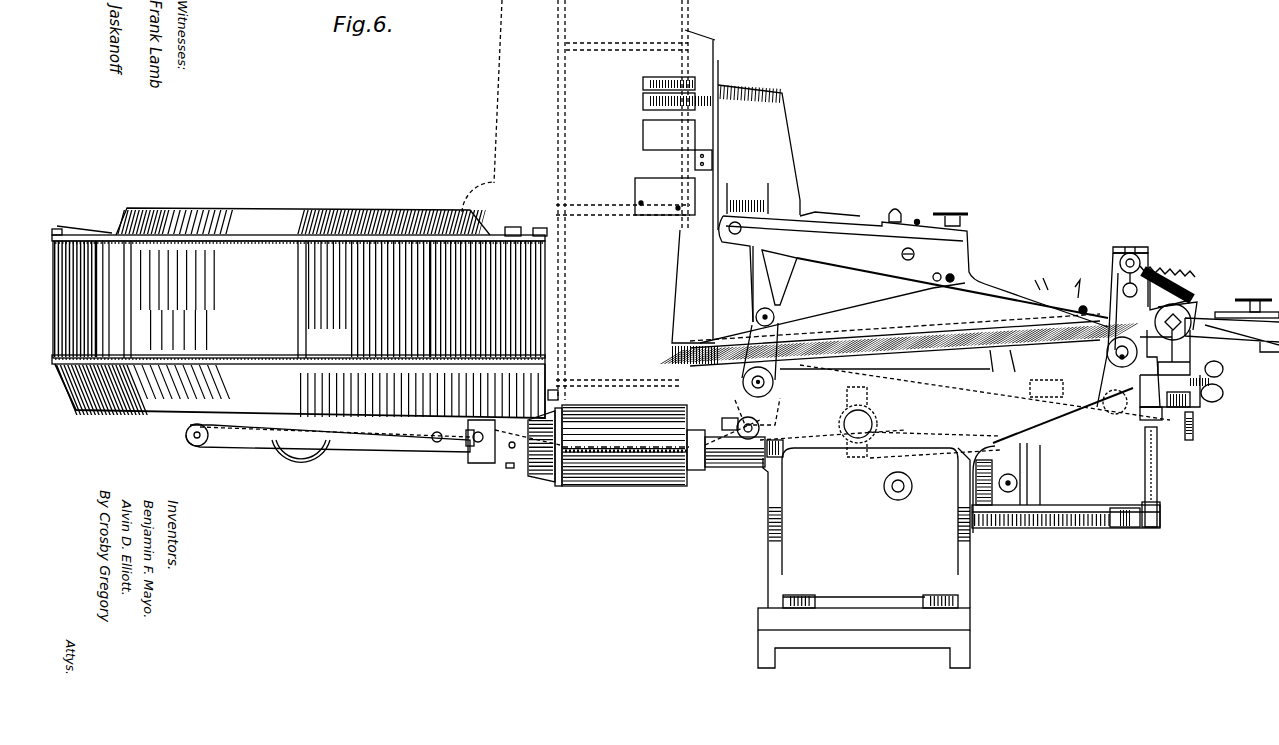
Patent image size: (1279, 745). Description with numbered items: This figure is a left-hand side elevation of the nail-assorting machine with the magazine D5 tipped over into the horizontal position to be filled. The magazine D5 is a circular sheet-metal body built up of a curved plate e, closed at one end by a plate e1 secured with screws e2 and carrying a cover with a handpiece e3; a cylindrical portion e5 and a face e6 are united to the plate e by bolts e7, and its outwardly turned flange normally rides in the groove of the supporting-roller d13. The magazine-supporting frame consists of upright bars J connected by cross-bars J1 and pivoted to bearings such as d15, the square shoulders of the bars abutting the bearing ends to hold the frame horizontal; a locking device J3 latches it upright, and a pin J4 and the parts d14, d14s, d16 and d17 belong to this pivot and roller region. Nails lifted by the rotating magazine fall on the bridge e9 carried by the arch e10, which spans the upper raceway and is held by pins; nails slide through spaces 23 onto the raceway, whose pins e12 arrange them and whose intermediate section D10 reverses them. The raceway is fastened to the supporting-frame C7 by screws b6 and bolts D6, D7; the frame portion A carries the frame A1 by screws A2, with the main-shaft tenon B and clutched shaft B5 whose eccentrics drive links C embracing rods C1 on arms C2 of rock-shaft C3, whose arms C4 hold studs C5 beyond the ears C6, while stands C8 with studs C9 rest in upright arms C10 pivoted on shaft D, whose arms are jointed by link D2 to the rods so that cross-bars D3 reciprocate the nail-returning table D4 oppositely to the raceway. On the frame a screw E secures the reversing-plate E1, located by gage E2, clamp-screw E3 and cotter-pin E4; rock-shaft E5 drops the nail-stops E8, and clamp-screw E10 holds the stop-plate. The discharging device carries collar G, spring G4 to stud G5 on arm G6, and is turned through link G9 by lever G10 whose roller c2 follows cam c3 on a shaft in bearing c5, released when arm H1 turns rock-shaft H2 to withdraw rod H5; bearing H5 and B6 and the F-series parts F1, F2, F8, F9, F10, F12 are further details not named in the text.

The curved plate e is at (75, 408).
The end plate e1 is at (128, 425).
The screws e2 is at (85, 405).
The handpiece e3 is at (300, 452).
The cylindrical portion e5 is at (350, 240).
The face e6 is at (174, 234).
The bolts e7 is at (298, 283).
The bridge e9 is at (650, 134).
The arch e10 is at (806, 96).
The pins e12 is at (748, 207).
The spaces 23 is at (645, 90).
The shaft D is at (1138, 354).
The link D2 is at (1098, 418).
The cross-bars D3 is at (805, 355).
The nail-returning table D4 is at (930, 305).
The magazine D5 is at (270, 194).
The bolt D6 is at (920, 253).
The bolt D7 is at (742, 229).
The intermediate connecting-section D10 is at (1099, 365).
The links C is at (800, 418).
The rods C1 is at (722, 428).
The arms C2 is at (760, 425).
The rock-shaft C3 is at (776, 383).
The upwardly-extended arms C4 is at (752, 335).
The shafts or studs C5 is at (758, 315).
The ears or legs C6 is at (764, 270).
The supporting-frame C7 is at (858, 236).
The stands C8 is at (1113, 262).
The studs C9 is at (1129, 297).
The upright arms C10 is at (1125, 334).
The screw E is at (953, 212).
The reversing-plate E1 is at (975, 234).
The gage E2 is at (882, 203).
The adjusting clamp-screw E3 is at (898, 204).
The cotter-pin E4 is at (918, 218).
The rock-shaft E5 is at (1130, 252).
The nail-stops E8 is at (1187, 273).
The clamp-screw E10 is at (1247, 297).
The support F1 is at (1206, 454).
The slide bar F2 is at (1232, 327).
The roller F8 is at (1224, 366).
The roller F9 is at (1224, 390).
The post F10 is at (1205, 427).
The block F12 is at (1200, 408).
The collar G is at (1085, 292).
The spring G4 is at (1167, 279).
The stud G5 is at (1195, 305).
The arm G6 is at (1200, 310).
The link G9 is at (1055, 290).
The lever G10 is at (1002, 444).
The arm H1 is at (1122, 510).
The rock-shaft H2 is at (1070, 528).
The rod H5 is at (900, 482).
The frame portion A is at (975, 640).
The frame A1 is at (972, 553).
The screws A2 is at (905, 596).
The tenon B is at (985, 411).
The shaft B5 is at (873, 422).
The bearing cap B6 is at (842, 442).
The upright bars J is at (245, 447).
The cross-bars J1 is at (213, 445).
The locking device J3 is at (430, 448).
The pin J4 is at (466, 436).
The supporting-roller d13 is at (655, 482).
The cylinder end d14 is at (556, 478).
The shaft d14s is at (735, 468).
The bearing d15 is at (480, 463).
The pin d16 is at (508, 452).
The link d17 is at (495, 452).
The screws b6 is at (955, 277).
The roller c2 is at (1046, 457).
The cam c3 is at (1054, 473).
The bearing c5 is at (970, 482).